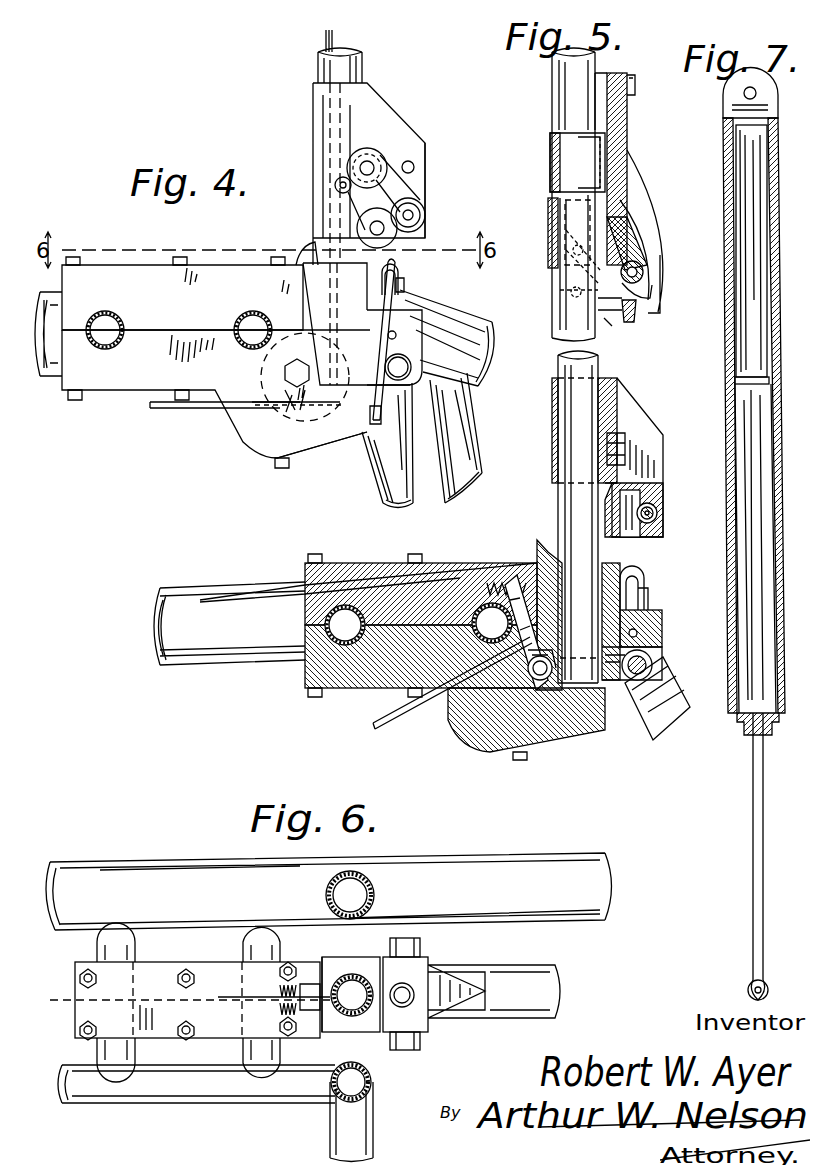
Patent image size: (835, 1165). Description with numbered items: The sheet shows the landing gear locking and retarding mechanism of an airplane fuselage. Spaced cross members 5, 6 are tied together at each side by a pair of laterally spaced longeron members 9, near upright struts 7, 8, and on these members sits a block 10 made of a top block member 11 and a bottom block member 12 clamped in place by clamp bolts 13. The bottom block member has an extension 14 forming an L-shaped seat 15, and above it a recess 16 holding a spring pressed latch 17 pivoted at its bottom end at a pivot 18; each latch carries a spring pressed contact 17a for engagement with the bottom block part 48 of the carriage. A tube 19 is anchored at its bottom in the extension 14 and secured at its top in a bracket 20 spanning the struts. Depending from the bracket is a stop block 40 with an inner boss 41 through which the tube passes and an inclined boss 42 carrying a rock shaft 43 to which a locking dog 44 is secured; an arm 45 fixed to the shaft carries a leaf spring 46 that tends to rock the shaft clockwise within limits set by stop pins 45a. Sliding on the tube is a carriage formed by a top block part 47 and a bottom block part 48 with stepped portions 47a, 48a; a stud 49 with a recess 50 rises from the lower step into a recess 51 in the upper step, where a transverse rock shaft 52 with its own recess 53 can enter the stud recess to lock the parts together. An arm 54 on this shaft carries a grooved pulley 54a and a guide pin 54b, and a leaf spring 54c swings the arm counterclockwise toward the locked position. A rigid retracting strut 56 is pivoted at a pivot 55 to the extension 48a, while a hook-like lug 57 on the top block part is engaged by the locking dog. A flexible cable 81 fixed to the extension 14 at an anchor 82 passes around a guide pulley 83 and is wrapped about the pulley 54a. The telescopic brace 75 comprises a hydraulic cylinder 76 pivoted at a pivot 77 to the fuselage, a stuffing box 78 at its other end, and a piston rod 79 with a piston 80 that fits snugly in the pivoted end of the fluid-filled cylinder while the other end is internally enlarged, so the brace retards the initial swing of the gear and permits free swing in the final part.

In FIG. 4, the cross member 5 is at (52, 360).
In FIG. 5, the cross member 5 is at (262, 668).
In FIG. 6, the cross member 5 is at (488, 860).
In FIG. 6, the cross member 6 is at (178, 1108).
In FIG. 6, the upright strut 7 is at (372, 1084).
In FIG. 6, the upright strut 8 is at (356, 880).
In FIG. 4, the longeron member 9 is at (106, 313).
In FIG. 5, the longeron member 9 is at (462, 585).
In FIG. 6, the longeron member 9 is at (97, 1055).
In FIG. 4, the block 10 is at (150, 393).
In FIG. 5, the block 10 is at (446, 712).
In FIG. 4, the top block member 11 is at (140, 268).
In FIG. 5, the top block member 11 is at (340, 572).
In FIG. 4, the bottom block member 12 is at (102, 394).
In FIG. 5, the bottom block member 12 is at (320, 688).
In FIG. 4, the clamp bolt 13 is at (188, 254).
In FIG. 5, the clamp bolt 13 is at (412, 558).
In FIG. 4, the extension 14 is at (330, 446).
In FIG. 5, the extension 14 is at (556, 742).
In FIG. 4, the L-shaped seat 15 is at (312, 340).
In FIG. 5, the recess 16 is at (516, 556).
In FIG. 6, the recess 16 is at (282, 1020).
In FIG. 4, the spring pressed latch 17 is at (312, 258).
In FIG. 5, the spring pressed latch 17 is at (548, 540).
In FIG. 6, the spring pressed latch 17 is at (342, 982).
In FIG. 5, the spring pressed contact 17a is at (500, 700).
In FIG. 4, the pivot 18 is at (265, 412).
In FIG. 5, the pivot 18 is at (535, 640).
In FIG. 4, the tube 19 is at (364, 66).
In FIG. 5, the tube 19 is at (560, 344).
In FIG. 6, the tube 19 is at (370, 1036).
In FIG. 5, the bracket 20 is at (545, 143).
In FIG. 5, the stop block 40 is at (626, 232).
In FIG. 5, the inner boss 41 is at (548, 210).
In FIG. 5, the inclined boss 42 is at (654, 264).
In FIG. 5, the rock shaft 43 is at (650, 266).
In FIG. 5, the locking dog 44 is at (630, 322).
In FIG. 5, the arm 45 is at (592, 292).
In FIG. 5, the stop pin 45a is at (566, 290).
In FIG. 5, the leaf spring 46 is at (560, 256).
In FIG. 4, the top block part 47 is at (308, 133).
In FIG. 5, the top block part 47 is at (548, 463).
In FIG. 4, the stepped portion 47a is at (425, 183).
In FIG. 5, the stepped portion 47a is at (664, 452).
In FIG. 4, the bottom block part 48 is at (310, 294).
In FIG. 5, the bottom block part 48 is at (550, 596).
In FIG. 4, the stepped portion 48a is at (423, 337).
In FIG. 5, the stepped portion 48a is at (663, 616).
In FIG. 6, the stepped portion 48a is at (432, 990).
In FIG. 4, the stud 49 is at (396, 270).
In FIG. 5, the stud 49 is at (648, 571).
In FIG. 6, the stud 49 is at (410, 1002).
In FIG. 4, the recess 50 is at (400, 284).
In FIG. 5, the recess 50 is at (646, 588).
In FIG. 6, the recess 50 is at (440, 968).
In FIG. 5, the recess 51 is at (642, 495).
In FIG. 4, the rock shaft 52 is at (422, 216).
In FIG. 5, the rock shaft 52 is at (657, 514).
In FIG. 5, the recess 53 is at (656, 520).
In FIG. 4, the arm 54 is at (386, 164).
In FIG. 4, the grooved pulley 54a is at (370, 142).
In FIG. 4, the guide pin 54b is at (337, 184).
In FIG. 4, the leaf spring 54c is at (415, 168).
In FIG. 4, the pivot 55 is at (386, 362).
In FIG. 5, the pivot 55 is at (655, 665).
In FIG. 6, the pivot 55 is at (410, 1050).
In FIG. 4, the lifting or retracting strut 56 is at (458, 500).
In FIG. 5, the lifting or retracting strut 56 is at (660, 728).
In FIG. 6, the lifting or retracting strut 56 is at (552, 1020).
In FIG. 5, the hook-like lug 57 is at (626, 428).
In FIG. 7, the telescopic brace 75 is at (784, 552).
In FIG. 7, the hydraulic cylinder 76 is at (766, 318).
In FIG. 7, the pivot 77 is at (757, 95).
In FIG. 7, the stuffing box 78 is at (771, 720).
In FIG. 7, the piston rod 79 is at (765, 771).
In FIG. 7, the piston 80 is at (762, 377).
In FIG. 4, the flexible cable 81 is at (381, 378).
In FIG. 4, the cable anchor 82 is at (368, 416).
In FIG. 4, the guide pulley 83 is at (358, 228).